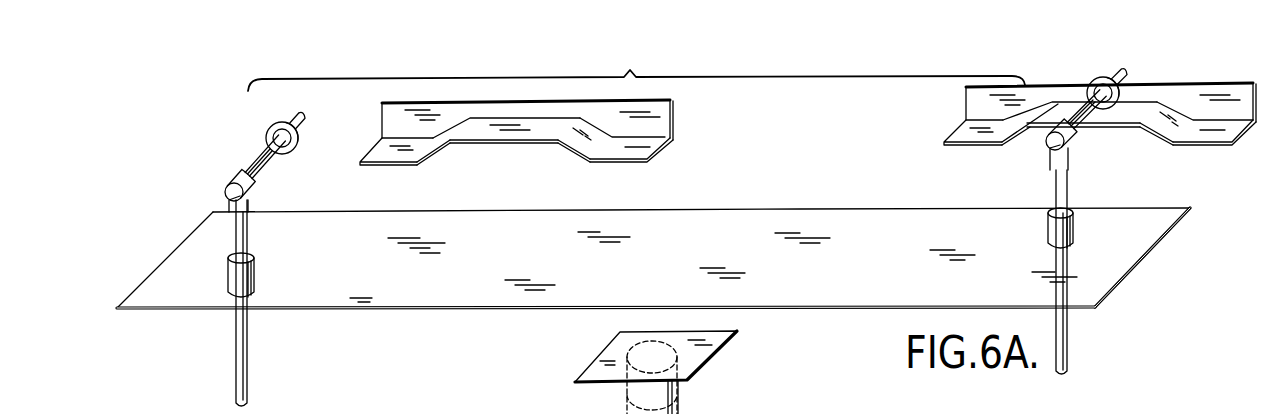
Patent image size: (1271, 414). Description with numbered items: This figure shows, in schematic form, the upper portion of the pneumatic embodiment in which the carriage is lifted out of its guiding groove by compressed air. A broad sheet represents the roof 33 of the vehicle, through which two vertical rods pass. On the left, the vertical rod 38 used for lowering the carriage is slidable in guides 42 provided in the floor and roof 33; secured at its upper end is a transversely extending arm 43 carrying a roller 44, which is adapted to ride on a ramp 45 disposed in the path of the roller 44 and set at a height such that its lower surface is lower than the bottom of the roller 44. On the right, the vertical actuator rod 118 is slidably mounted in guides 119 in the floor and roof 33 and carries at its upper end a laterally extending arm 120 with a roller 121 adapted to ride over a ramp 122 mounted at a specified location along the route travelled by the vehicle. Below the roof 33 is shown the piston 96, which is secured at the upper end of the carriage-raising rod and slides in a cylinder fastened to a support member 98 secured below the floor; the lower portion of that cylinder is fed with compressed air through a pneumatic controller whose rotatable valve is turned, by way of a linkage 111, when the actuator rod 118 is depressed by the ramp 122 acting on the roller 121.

The roof 33 is at (796, 216).
The vertical rod 38 is at (248, 366).
The guides 42 is at (254, 279).
The transversely extending arm 43 is at (266, 156).
The roller 44 is at (297, 146).
The ramp 45 is at (568, 148).
The piston 96 is at (627, 410).
The support member 98 is at (595, 366).
The linkage 111 is at (832, 413).
The vertical actuator rod 118 is at (1065, 353).
The guides 119 is at (1050, 233).
The laterally extending arm 120 is at (1090, 118).
The roller 121 is at (1110, 100).
The ramp 122 is at (1022, 124).